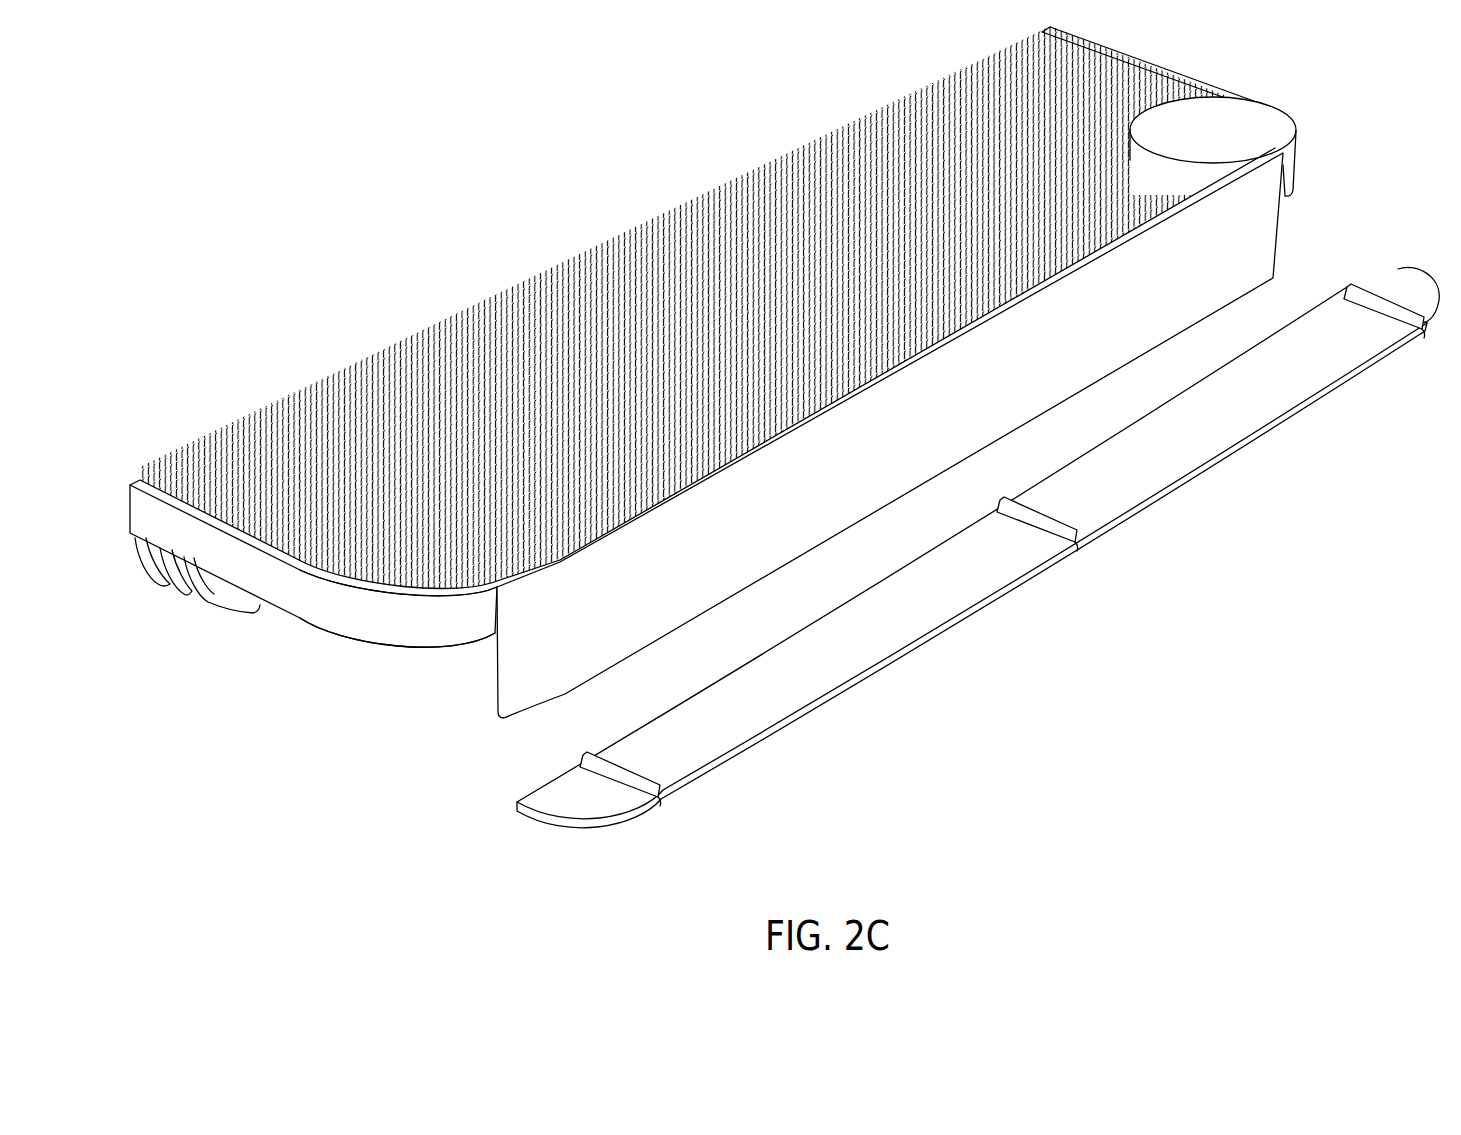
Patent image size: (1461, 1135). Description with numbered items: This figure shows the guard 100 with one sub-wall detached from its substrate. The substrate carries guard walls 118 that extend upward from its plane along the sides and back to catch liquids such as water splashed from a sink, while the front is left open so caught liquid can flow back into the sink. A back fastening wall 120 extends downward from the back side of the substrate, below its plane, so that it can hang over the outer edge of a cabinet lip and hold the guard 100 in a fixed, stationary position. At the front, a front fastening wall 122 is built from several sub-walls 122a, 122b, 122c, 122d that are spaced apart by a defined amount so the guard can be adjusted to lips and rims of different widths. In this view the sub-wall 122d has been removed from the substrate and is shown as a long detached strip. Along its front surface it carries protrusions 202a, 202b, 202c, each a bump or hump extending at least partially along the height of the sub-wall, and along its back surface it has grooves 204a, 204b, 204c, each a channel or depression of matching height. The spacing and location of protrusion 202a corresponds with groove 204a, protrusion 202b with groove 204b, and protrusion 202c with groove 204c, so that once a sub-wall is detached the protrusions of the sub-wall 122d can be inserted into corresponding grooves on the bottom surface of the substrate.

The guard 100 is at (726, 372).
The guard wall 118 is at (338, 606).
The back fastening wall 120 is at (1266, 207).
The front fastening wall 122 is at (186, 617).
The sub-wall 122a is at (140, 560).
The sub-wall 122b is at (175, 583).
The sub-wall 122c is at (218, 609).
The sub-wall 122d is at (1420, 277).
The protrusion 202a is at (1378, 302).
The protrusion 202b is at (1031, 514).
The protrusion 202c is at (612, 770).
The groove 204a is at (1425, 332).
The groove 204b is at (1078, 545).
The groove 204c is at (663, 802).